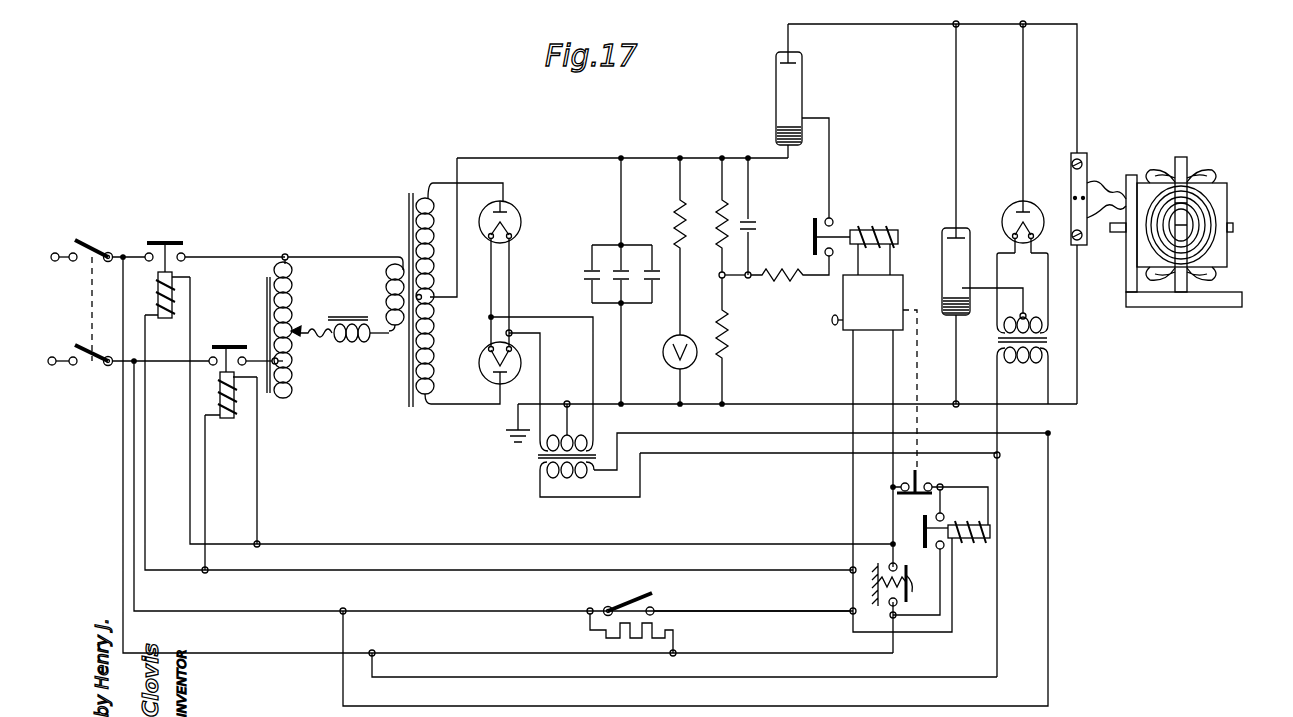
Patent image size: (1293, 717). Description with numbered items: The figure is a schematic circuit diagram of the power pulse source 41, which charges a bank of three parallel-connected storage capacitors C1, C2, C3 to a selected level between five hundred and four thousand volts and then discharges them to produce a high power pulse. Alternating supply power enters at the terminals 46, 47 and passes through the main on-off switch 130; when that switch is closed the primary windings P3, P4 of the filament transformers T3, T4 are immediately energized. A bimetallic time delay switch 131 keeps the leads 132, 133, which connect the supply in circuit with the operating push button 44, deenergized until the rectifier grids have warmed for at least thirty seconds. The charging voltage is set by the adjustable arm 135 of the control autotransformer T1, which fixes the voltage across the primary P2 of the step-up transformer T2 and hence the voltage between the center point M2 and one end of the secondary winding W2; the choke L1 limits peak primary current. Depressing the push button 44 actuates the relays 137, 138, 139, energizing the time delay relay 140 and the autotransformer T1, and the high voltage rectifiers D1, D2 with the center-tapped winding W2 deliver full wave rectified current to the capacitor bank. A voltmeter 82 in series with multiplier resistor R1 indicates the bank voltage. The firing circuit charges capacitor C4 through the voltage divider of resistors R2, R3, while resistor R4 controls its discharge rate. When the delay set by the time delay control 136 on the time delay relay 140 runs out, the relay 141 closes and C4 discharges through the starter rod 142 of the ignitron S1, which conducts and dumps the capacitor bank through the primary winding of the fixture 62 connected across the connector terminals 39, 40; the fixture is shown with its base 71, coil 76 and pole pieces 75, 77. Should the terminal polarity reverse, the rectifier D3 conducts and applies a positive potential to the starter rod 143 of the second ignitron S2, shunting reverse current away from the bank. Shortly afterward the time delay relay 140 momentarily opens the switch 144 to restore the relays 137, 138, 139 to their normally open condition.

The terminal 46 is at (74, 250).
The main on-off switch 130 is at (95, 250).
The terminal 47 is at (56, 370).
The relay 137 is at (175, 303).
The relay 138 is at (235, 410).
The adjustable arm 135 is at (296, 329).
The control autotransformer T1 is at (298, 292).
The choke L1 is at (350, 343).
The primary winding P2 is at (385, 290).
The step-up transformer T2 is at (413, 192).
The secondary winding W2 is at (437, 240).
The center point M2 is at (432, 302).
The high voltage rectifier D1 is at (521, 218).
The high voltage rectifier D2 is at (481, 371).
The storage capacitor C1 is at (586, 276).
The storage capacitor C2 is at (619, 275).
The storage capacitor C3 is at (649, 275).
The capacitor C4 is at (757, 229).
The multiplier resistor R1 is at (673, 222).
The resistor R2 is at (715, 222).
The resistor R3 is at (731, 336).
The resistor R4 is at (785, 285).
The voltmeter 82 is at (668, 343).
The ignitron S1 is at (805, 90).
The starter rod 142 is at (790, 129).
The relay 141 is at (877, 230).
The time delay relay 140 is at (900, 274).
The time delay control 136 is at (830, 324).
The second ignitron S2 is at (960, 226).
The starter rod 143 is at (958, 300).
The high voltage rectifier D3 is at (1029, 204).
The filament transformer T3 is at (999, 340).
The primary winding P3 is at (1024, 361).
The filament transformer T4 is at (537, 458).
The primary winding P4 is at (576, 478).
The switch 144 is at (922, 486).
The relay 139 is at (974, 540).
The push button 44 is at (908, 584).
The bimetallic time delay switch 131 is at (637, 601).
The lead 132 is at (775, 611).
The lead 133 is at (785, 653).
The power pulse source 41 is at (370, 462).
The connector terminal 39 is at (1083, 162).
The connector terminal 40 is at (1082, 240).
The base 71 is at (1176, 306).
The fixture 62 is at (1228, 187).
The coil 76 is at (1216, 221).
The pole piece 75 is at (1213, 172).
The pole piece 77 is at (1214, 281).